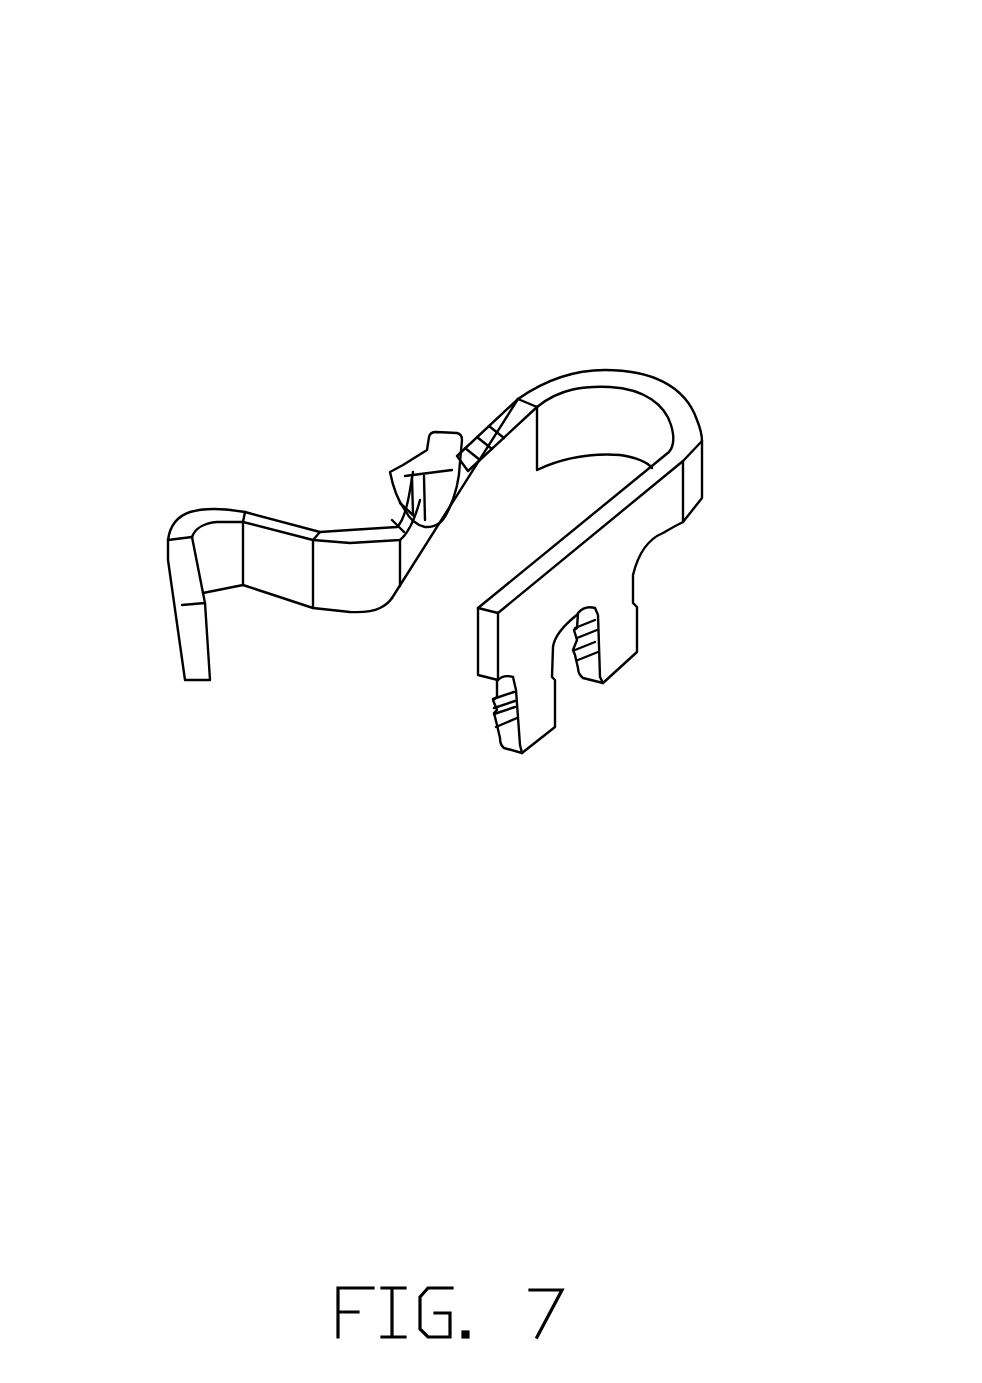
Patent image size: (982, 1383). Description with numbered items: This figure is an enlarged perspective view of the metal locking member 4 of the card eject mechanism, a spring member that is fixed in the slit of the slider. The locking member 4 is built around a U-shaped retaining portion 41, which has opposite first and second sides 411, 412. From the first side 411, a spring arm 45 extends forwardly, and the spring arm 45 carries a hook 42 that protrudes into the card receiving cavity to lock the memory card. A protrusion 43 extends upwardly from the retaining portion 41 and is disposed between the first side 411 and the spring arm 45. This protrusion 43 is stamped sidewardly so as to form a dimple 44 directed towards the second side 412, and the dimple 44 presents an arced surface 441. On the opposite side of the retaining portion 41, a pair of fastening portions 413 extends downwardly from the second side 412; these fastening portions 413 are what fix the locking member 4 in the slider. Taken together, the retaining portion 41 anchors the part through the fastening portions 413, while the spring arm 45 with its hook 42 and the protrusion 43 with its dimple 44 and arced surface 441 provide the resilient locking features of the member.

The locking member 4 is at (469, 46).
The retaining portion 41 is at (588, 546).
The first side 411 is at (530, 448).
The second side 412 is at (558, 598).
The fastening portions 413 is at (533, 718).
The hook 42 is at (202, 512).
The protrusion 43 is at (440, 450).
The dimple 44 is at (455, 458).
The arced surface 441 is at (437, 492).
The spring arm 45 is at (363, 587).